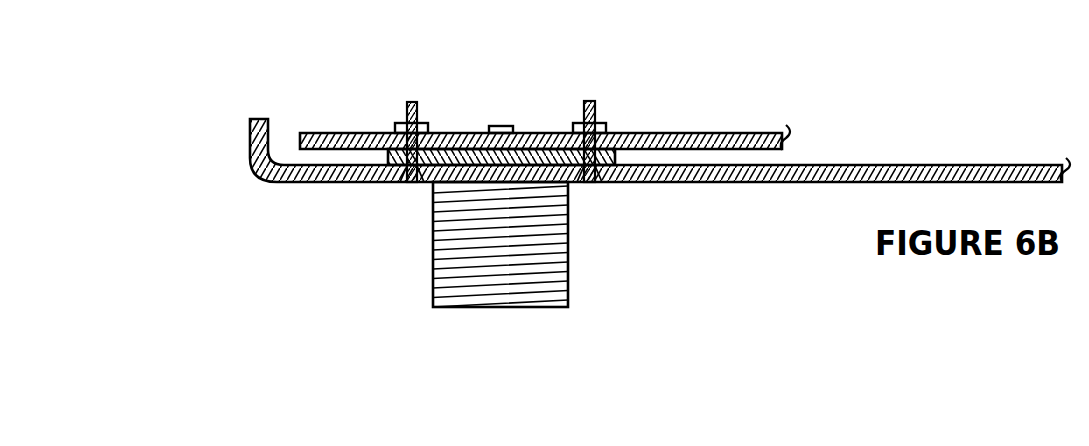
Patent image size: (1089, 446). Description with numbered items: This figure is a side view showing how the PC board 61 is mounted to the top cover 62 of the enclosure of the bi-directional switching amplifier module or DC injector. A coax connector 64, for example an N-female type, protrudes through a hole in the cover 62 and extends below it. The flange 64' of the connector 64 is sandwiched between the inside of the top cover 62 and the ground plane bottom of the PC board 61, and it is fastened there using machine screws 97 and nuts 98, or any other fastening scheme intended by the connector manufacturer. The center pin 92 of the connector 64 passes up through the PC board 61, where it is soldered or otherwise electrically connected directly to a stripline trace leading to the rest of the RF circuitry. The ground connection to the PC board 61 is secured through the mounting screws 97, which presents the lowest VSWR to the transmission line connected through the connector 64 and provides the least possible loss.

The PC board 61 is at (703, 128).
The top cover 62 is at (733, 184).
The coax connector 64 is at (458, 244).
The flange 64' is at (528, 216).
The center pin 92 is at (500, 122).
The machine screws 97 is at (410, 100).
The nuts 98 is at (392, 128).